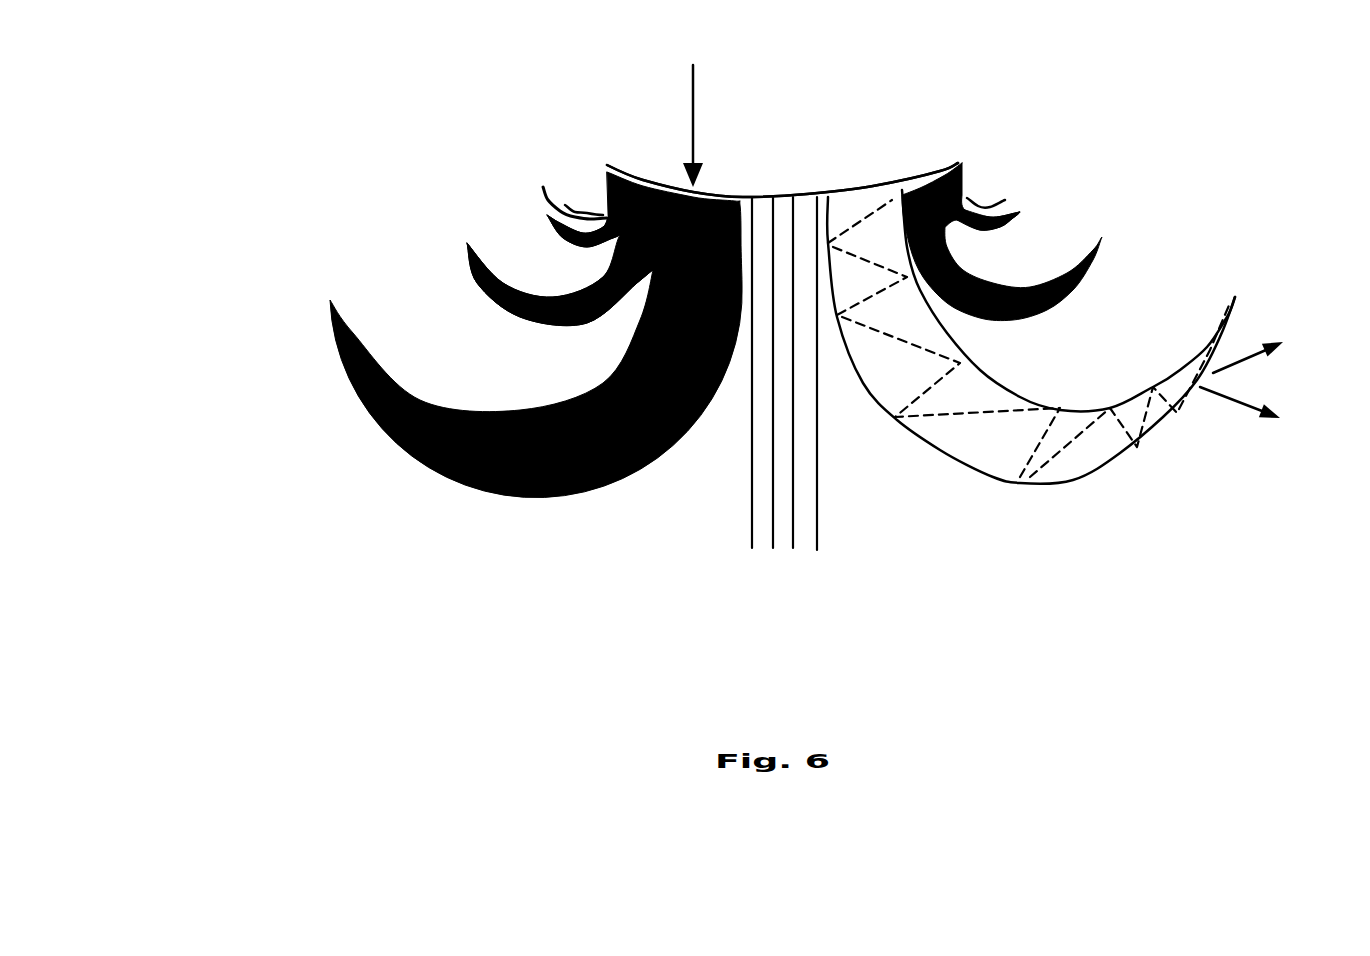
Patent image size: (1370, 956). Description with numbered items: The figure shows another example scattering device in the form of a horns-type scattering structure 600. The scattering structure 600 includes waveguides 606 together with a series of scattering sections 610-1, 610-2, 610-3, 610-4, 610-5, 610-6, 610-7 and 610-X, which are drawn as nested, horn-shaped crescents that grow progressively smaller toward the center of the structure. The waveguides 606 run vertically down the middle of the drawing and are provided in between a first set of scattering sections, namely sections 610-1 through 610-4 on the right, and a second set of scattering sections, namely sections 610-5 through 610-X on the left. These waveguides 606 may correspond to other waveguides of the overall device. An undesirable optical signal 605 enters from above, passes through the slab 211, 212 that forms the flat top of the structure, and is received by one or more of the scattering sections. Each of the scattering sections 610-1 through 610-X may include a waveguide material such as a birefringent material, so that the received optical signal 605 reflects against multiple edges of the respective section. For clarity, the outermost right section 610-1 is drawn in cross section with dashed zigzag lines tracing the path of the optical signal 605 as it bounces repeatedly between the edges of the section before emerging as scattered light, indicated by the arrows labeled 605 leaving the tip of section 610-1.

The horns-type scattering structure 600 is at (393, 110).
The optical signal 605 is at (895, 512).
The waveguides 606 is at (775, 572).
The slab 211 is at (831, 145).
The slab 212 is at (865, 185).
The scattering section 610-1 is at (1130, 458).
The scattering section 610-2 is at (1104, 253).
The scattering section 610-3 is at (1021, 212).
The scattering section 610-4 is at (968, 199).
The scattering section 610-5 is at (387, 425).
The scattering section 610-6 is at (483, 283).
The scattering section 610-7 is at (567, 234).
The scattering section 610-X is at (543, 187).